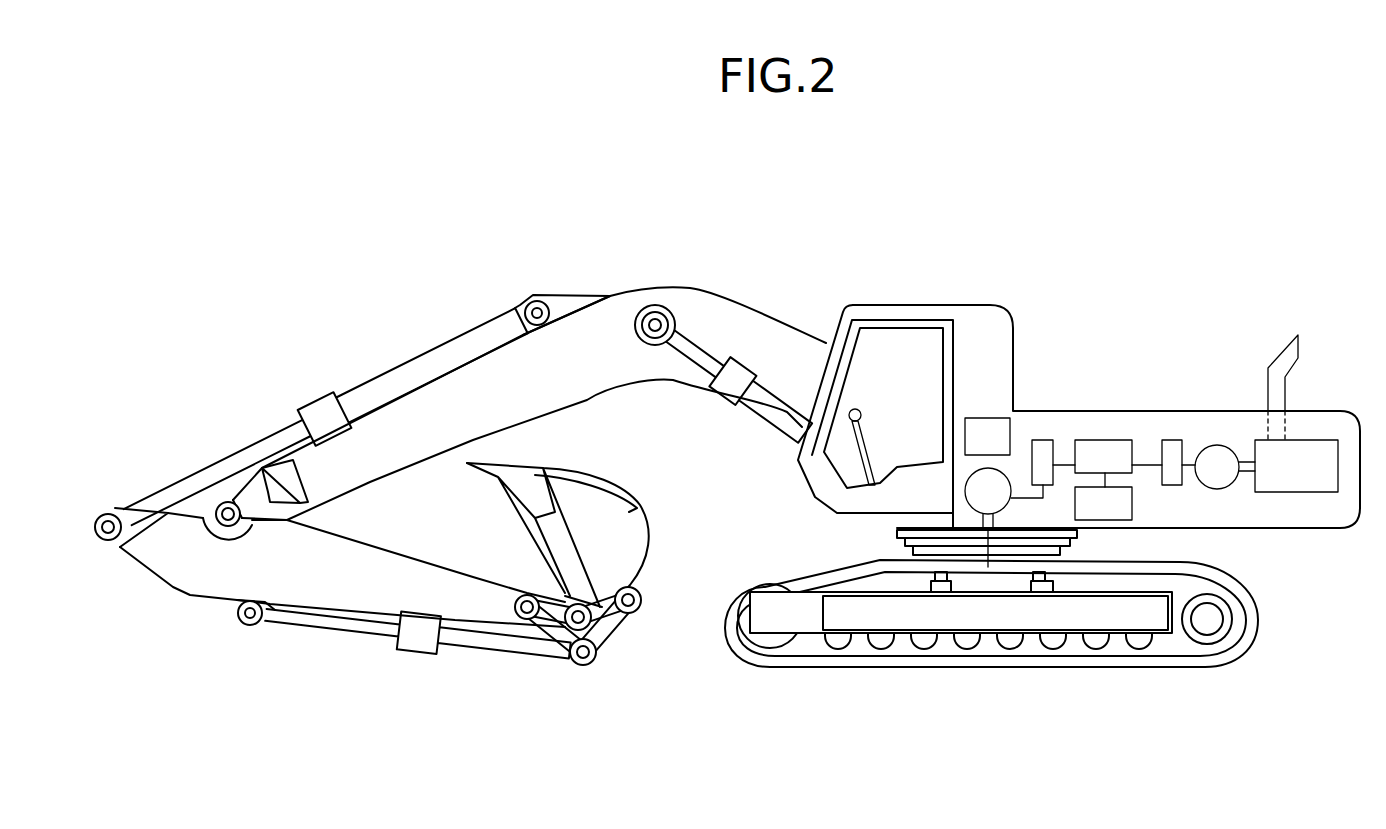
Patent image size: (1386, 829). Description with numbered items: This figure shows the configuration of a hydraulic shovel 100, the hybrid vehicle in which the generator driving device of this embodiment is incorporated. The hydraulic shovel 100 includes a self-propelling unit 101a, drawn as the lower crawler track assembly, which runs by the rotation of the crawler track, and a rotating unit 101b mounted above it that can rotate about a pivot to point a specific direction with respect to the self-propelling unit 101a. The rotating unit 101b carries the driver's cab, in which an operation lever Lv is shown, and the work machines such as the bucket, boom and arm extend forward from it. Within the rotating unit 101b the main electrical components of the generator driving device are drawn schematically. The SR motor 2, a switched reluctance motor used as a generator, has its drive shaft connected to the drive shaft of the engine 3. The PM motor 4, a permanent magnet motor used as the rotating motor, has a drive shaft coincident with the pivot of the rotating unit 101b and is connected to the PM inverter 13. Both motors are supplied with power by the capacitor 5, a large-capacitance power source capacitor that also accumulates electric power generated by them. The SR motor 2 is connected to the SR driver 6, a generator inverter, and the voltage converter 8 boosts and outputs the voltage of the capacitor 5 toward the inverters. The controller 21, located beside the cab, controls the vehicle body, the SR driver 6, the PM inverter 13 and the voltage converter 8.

The hydraulic shovel 100 is at (1123, 190).
The self-propelling unit 101a is at (1077, 613).
The rotating unit 101b is at (897, 310).
The operation lever Lv is at (858, 409).
The controller 21 is at (982, 418).
The PM motor 4 is at (1003, 473).
The PM inverter 13 is at (1040, 440).
The voltage converter 8 is at (1087, 440).
The capacitor (power source capacitor) 5 is at (1105, 520).
The SR driver (generator inverter) 6 is at (1172, 440).
The SR motor 2 is at (1227, 490).
The engine 3 is at (1310, 447).